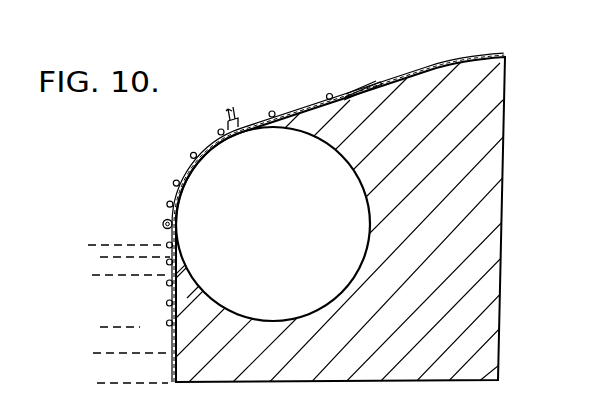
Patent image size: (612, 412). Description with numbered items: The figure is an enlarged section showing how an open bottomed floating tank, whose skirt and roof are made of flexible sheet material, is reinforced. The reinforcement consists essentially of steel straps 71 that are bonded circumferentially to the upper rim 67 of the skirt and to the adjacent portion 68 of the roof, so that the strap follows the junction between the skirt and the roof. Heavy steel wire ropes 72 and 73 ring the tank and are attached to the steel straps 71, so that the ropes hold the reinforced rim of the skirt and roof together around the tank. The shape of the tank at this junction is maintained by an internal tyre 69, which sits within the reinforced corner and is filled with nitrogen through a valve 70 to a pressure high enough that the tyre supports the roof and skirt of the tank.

The upper rim of the skirt 67 is at (175, 368).
The adjacent portion of the roof 68 is at (419, 70).
The internal tyre 69 is at (369, 226).
The valve 70 is at (236, 118).
The steel straps 71 is at (348, 96).
The heavy steel wire rope 72 is at (162, 224).
The heavy steel wire rope 73 is at (327, 97).